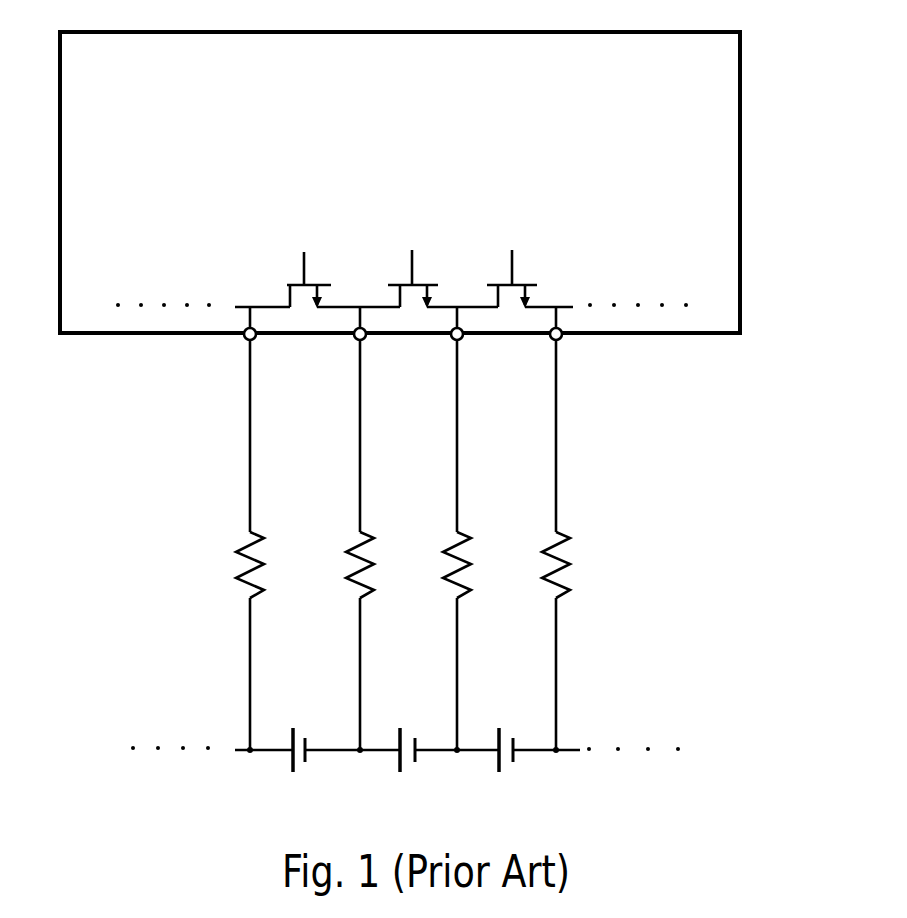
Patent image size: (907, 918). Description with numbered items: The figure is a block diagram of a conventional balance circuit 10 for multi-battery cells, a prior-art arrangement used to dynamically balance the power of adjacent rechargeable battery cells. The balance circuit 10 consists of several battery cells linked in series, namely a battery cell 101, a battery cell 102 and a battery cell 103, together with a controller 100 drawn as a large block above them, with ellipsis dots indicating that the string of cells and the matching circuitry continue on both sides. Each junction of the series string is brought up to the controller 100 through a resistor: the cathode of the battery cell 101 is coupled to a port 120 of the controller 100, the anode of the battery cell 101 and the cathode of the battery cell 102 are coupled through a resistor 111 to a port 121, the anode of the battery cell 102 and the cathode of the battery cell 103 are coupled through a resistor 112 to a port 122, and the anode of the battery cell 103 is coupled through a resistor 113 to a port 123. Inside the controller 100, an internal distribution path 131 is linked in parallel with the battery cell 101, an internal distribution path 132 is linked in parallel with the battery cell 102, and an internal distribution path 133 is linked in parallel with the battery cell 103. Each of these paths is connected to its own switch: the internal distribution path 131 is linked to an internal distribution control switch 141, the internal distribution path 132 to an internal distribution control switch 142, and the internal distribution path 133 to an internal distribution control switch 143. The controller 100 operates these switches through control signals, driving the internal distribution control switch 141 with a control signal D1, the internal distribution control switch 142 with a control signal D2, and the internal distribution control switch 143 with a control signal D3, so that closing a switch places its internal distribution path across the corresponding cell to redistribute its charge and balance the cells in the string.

The balance circuit 10 is at (894, 103).
The controller 100 is at (424, 103).
The control signal D1 is at (482, 261).
The control signal D2 is at (377, 261).
The control signal D3 is at (273, 264).
The internal distribution control switch 141 is at (493, 283).
The internal distribution control switch 142 is at (397, 283).
The internal distribution control switch 143 is at (282, 284).
The internal distribution path 131 is at (477, 306).
The internal distribution path 132 is at (373, 306).
The internal distribution path 133 is at (263, 306).
The port 120 is at (563, 339).
The port 121 is at (464, 339).
The port 122 is at (367, 339).
The port 123 is at (257, 339).
The resistor 111 is at (472, 545).
The resistor 112 is at (375, 545).
The resistor 113 is at (265, 545).
The battery cell 101 is at (518, 750).
The battery cell 102 is at (420, 750).
The battery cell 103 is at (310, 750).